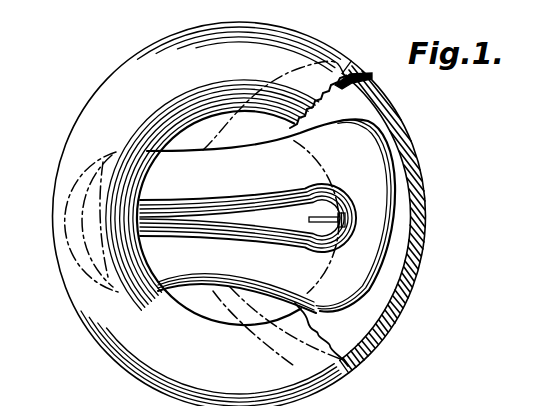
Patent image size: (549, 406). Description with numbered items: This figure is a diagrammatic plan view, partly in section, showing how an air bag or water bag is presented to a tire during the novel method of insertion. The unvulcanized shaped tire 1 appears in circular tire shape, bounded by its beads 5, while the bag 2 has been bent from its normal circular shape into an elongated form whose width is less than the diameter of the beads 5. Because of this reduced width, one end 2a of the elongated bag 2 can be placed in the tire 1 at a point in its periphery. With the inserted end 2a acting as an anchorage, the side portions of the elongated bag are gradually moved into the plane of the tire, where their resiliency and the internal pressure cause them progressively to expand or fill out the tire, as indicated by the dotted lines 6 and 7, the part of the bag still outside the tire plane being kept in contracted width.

The unvulcanized shaped tire 1 is at (397, 128).
The bag 2 is at (267, 216).
The end of the elongated bag 2a is at (383, 186).
The beads 5 is at (192, 322).
The dotted line 6 is at (341, 62).
The dotted line 7 is at (307, 70).